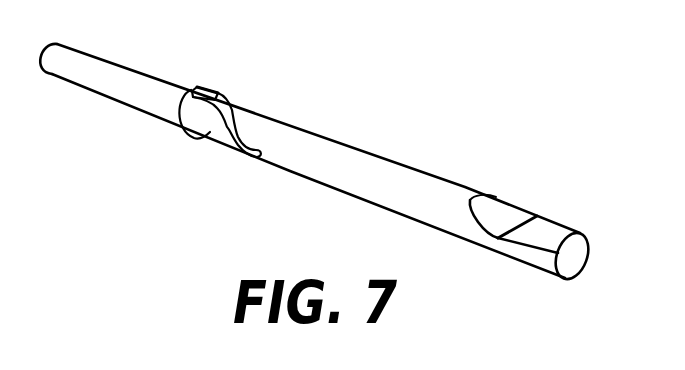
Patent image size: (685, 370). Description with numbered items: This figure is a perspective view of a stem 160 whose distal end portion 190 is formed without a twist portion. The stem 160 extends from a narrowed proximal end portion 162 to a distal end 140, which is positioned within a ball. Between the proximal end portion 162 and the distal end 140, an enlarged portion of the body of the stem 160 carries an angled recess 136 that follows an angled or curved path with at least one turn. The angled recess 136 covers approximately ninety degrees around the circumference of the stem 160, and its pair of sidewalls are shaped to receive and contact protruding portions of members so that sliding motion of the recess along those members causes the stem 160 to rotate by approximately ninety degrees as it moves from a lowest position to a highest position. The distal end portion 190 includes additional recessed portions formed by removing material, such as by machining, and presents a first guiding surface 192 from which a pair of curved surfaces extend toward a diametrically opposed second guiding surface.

The stem 160 is at (349, 149).
The proximal end portion 162 is at (127, 91).
The angled recess 136 is at (221, 122).
The first guiding surface 192 is at (533, 223).
The distal end portion 190 is at (570, 216).
The distal end 140 is at (349, 164).